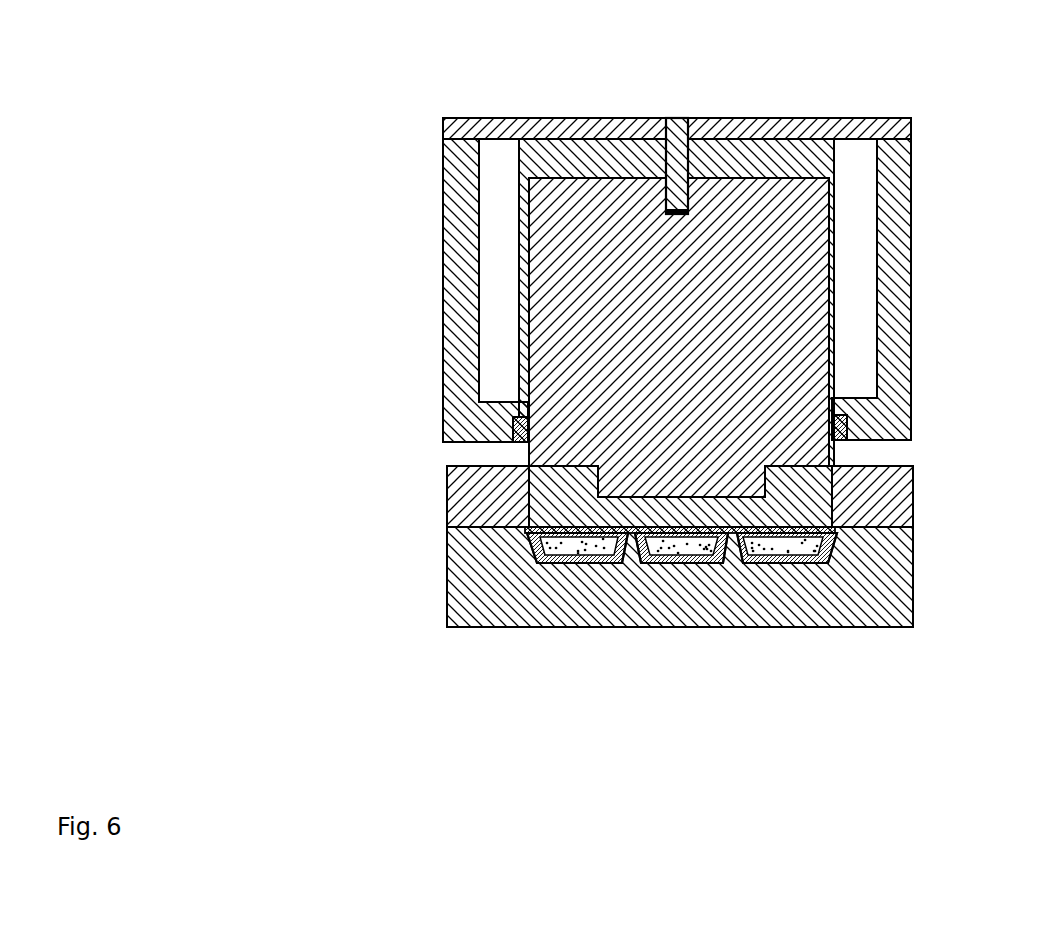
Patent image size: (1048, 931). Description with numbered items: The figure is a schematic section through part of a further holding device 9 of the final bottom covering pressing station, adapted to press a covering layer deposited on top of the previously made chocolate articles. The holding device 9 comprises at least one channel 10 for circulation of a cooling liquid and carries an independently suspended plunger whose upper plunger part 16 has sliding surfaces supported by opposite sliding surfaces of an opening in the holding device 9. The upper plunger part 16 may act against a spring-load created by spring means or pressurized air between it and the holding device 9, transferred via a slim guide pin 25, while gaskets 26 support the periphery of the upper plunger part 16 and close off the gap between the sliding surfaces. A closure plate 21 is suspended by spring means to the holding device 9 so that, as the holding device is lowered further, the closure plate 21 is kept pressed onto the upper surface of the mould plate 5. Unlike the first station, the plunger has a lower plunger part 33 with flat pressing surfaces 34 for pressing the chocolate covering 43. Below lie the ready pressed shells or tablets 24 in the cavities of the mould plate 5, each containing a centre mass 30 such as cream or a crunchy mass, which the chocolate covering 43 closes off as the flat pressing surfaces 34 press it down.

The mould plate 5 is at (880, 567).
The holding device 9 is at (895, 330).
The channel 10 is at (853, 248).
The upper plunger part 16 is at (588, 288).
The closure plate 21 is at (895, 477).
The articles 24 is at (785, 553).
The guide pin 25 is at (688, 118).
The gaskets 26 is at (847, 417).
The centre mass 30 is at (673, 543).
The lower plunger part 33 is at (528, 468).
The flat pressing surfaces 34 is at (540, 518).
The chocolate covering 43 is at (530, 528).